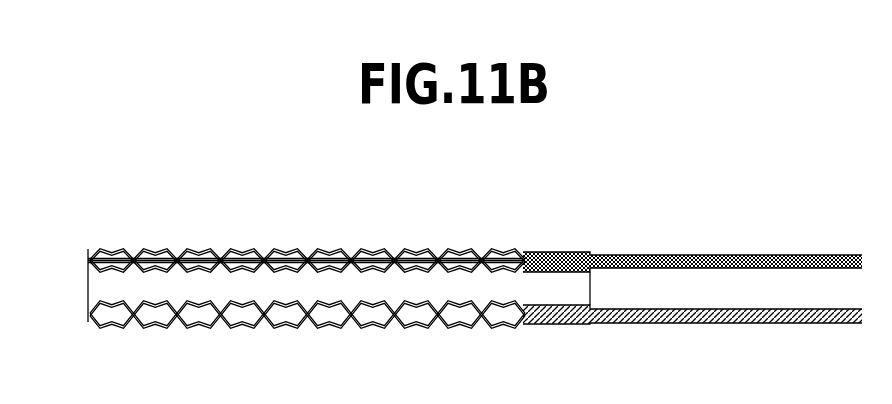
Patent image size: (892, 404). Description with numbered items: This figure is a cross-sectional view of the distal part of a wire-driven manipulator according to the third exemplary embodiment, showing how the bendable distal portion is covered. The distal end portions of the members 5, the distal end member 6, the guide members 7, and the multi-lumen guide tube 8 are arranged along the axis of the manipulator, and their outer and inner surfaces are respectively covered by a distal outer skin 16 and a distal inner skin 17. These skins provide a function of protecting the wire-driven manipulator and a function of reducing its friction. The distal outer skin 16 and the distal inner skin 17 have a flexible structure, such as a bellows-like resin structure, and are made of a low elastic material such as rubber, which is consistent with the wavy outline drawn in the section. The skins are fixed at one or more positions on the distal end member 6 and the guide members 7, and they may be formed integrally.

The members 5 is at (160, 250).
The distal end member 6 is at (89, 323).
The guide members 7 is at (393, 323).
The multi-lumen guide tube 8 is at (622, 325).
The distal outer skin 16 is at (284, 325).
The distal inner skin 17 is at (190, 322).